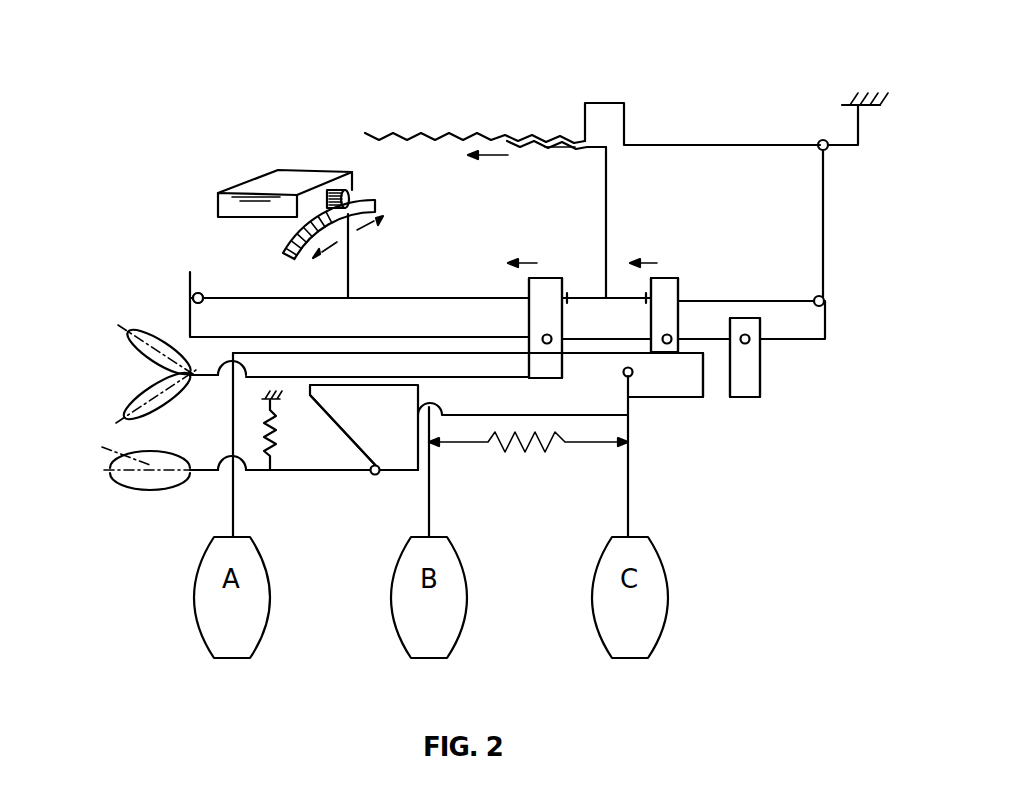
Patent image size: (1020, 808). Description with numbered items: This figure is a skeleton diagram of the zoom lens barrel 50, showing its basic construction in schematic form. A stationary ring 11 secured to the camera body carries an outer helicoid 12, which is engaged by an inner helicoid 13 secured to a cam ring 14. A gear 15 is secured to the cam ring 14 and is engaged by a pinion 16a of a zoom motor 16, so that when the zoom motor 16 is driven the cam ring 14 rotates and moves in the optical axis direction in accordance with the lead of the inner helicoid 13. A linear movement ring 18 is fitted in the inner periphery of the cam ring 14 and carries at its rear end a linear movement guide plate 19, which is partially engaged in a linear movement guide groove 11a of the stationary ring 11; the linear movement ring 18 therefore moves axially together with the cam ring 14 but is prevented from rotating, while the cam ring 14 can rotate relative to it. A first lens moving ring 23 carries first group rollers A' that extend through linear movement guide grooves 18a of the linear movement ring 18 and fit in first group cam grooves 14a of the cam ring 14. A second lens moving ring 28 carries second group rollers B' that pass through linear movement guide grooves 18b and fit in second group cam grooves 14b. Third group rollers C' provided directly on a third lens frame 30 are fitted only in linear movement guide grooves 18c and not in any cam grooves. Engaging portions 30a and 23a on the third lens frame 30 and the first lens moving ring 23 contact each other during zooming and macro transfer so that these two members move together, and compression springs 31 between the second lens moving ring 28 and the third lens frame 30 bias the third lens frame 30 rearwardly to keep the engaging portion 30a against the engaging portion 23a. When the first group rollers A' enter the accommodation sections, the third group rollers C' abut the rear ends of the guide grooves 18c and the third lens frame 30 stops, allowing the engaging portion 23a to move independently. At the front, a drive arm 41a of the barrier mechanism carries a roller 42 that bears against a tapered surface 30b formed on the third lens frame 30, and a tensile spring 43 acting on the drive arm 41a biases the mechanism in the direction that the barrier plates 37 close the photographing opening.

The drive mechanism 50 is at (210, 80).
The stationary ring 11 is at (610, 103).
The linear movement guide groove 11a is at (778, 143).
The outer helicoid 12 is at (520, 136).
The inner helicoid 13 is at (573, 152).
The cam ring 14 is at (746, 299).
The first group cam grooves 14a is at (680, 288).
The second group cam grooves 14b is at (529, 290).
The gear 15 is at (376, 201).
The zoom motor 16 is at (304, 170).
The pinion 16a is at (350, 186).
The linear movement ring 18 is at (786, 341).
The linear movement guide grooves 18a is at (190, 272).
The linear movement guide grooves 18b is at (556, 339).
The linear movement guide grooves 18c is at (756, 339).
The linear movement guide plate 19 is at (824, 236).
The first lens moving ring 23 is at (441, 352).
The engaging portion 23a is at (703, 358).
The second lens moving ring 28 is at (494, 378).
The third lens frame 30 is at (432, 456).
The engaging portion 30a is at (633, 372).
The tapered surface 30b is at (352, 438).
The compression springs 31 is at (543, 450).
The first barrier plates 37 is at (134, 365).
The drive arm 41a is at (290, 476).
The roller 42 is at (379, 476).
The tensile spring 43 is at (274, 442).
The first group rollers A' is at (664, 284).
The second group rollers B' is at (556, 304).
The third group rollers C' is at (746, 374).